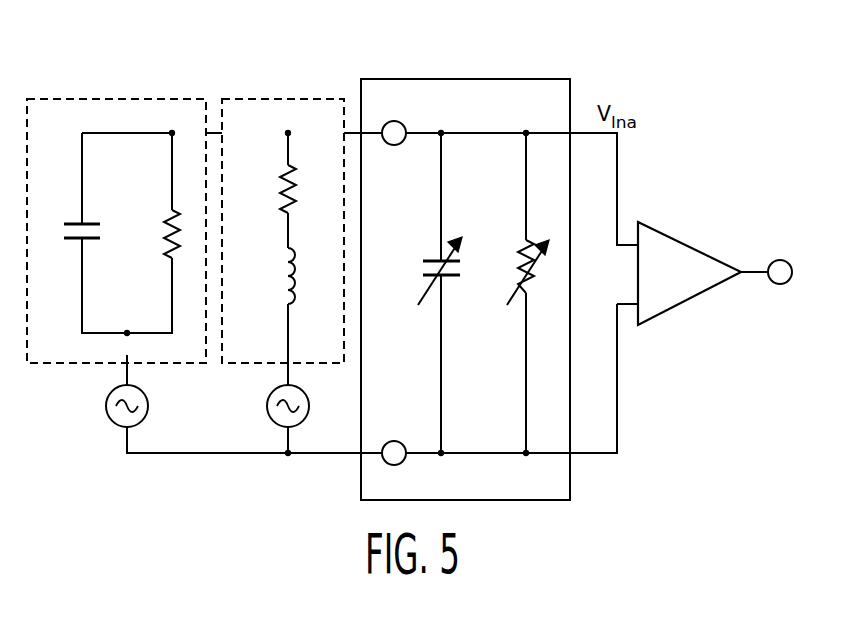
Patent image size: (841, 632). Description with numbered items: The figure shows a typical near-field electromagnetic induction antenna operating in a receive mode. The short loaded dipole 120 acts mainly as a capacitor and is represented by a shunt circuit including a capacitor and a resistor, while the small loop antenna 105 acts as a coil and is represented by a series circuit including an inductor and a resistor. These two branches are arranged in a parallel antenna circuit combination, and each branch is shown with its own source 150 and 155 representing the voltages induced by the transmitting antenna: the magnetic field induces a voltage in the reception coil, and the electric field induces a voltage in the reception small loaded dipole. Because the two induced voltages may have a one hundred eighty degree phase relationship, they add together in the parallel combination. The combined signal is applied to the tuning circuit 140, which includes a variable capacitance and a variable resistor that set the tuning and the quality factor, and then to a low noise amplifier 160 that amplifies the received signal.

The short loaded dipole 120 is at (90, 98).
The small loop antenna 105 is at (297, 98).
The tuning circuit 140 is at (553, 78).
The signal source 150 is at (107, 413).
The signal source 155 is at (267, 412).
The low noise amplifier 160 is at (693, 245).